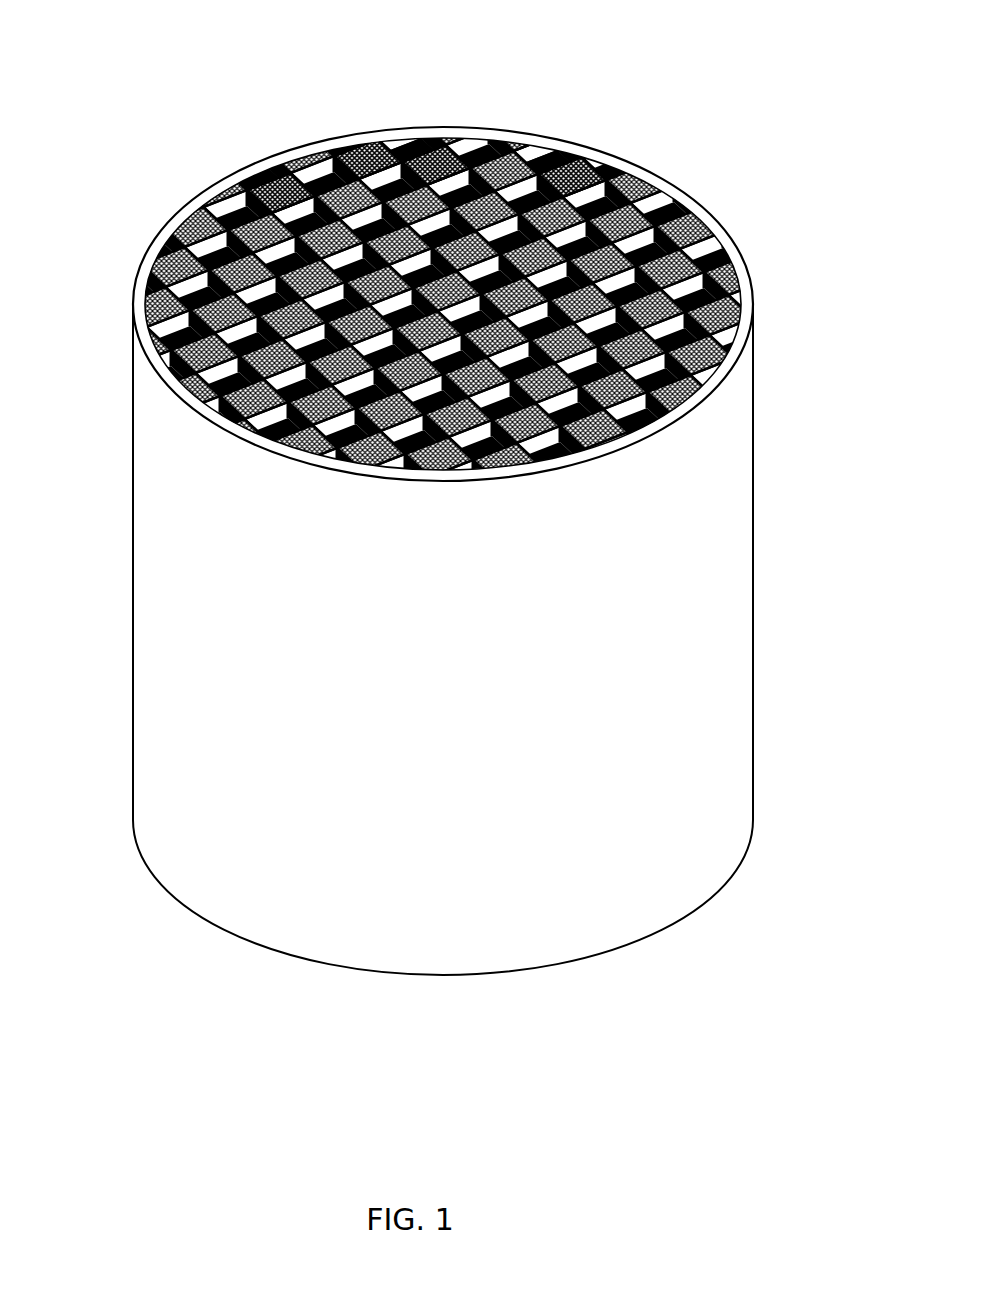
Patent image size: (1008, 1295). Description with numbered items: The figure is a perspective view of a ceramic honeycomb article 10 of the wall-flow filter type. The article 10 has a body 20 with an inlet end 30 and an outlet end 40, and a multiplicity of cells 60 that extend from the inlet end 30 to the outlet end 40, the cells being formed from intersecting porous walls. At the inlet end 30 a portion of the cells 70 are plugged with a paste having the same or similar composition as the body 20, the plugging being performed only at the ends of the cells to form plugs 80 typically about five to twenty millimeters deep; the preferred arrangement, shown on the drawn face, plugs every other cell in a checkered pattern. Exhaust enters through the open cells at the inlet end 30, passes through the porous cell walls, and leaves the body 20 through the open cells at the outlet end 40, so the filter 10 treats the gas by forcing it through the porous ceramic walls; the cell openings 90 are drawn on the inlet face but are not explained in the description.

The particulate filter 10 is at (638, 130).
The honeycomb structure 20 is at (170, 307).
The outer peripheral wall 30 is at (690, 185).
The outlet end face 40 is at (618, 940).
The cell 60 is at (308, 153).
The partition wall 70 is at (244, 178).
The plugging portion 80 is at (357, 155).
The cell opening 90 is at (535, 165).